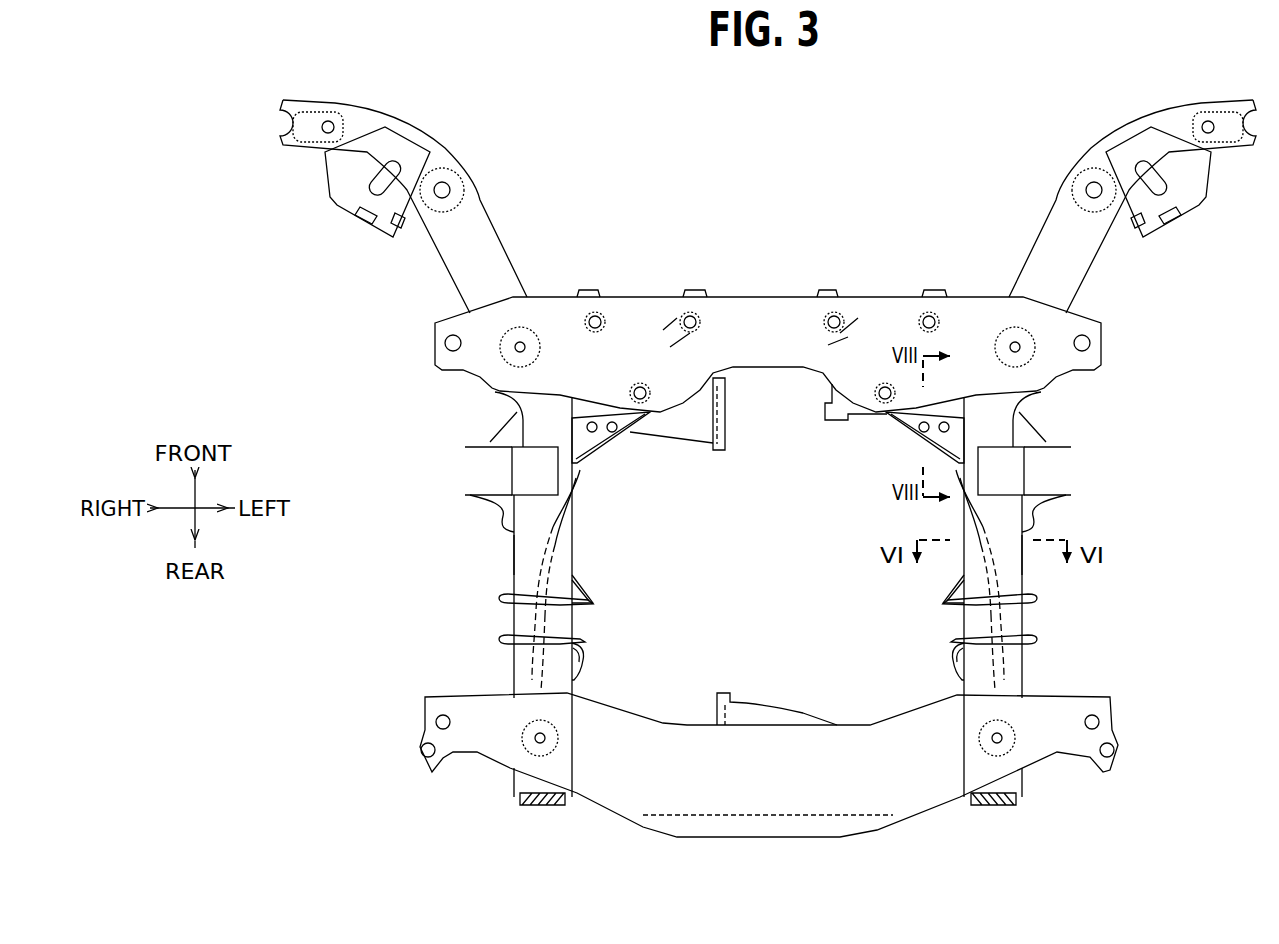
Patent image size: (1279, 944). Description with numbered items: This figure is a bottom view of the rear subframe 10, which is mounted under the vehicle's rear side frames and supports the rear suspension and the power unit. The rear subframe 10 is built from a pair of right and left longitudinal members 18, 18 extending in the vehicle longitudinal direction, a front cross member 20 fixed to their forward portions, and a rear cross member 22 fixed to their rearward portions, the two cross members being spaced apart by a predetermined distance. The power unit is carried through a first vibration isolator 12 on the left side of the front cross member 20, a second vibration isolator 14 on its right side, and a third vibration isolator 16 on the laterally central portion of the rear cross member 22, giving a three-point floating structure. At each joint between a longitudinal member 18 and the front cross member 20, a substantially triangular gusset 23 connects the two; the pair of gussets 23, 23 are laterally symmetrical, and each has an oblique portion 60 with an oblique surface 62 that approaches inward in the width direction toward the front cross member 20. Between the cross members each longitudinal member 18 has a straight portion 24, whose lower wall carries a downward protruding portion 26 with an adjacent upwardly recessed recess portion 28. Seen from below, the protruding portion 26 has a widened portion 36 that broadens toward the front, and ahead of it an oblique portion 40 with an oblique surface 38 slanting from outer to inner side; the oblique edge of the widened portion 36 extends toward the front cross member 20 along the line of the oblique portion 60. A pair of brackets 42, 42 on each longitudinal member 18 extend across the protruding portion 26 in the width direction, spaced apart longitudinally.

The rear subframe 10 is at (853, 168).
The first vibration isolator 12 is at (826, 392).
The second vibration isolator 14 is at (728, 442).
The third vibration isolator 16 is at (772, 696).
The longitudinal member 18 is at (510, 675).
The front cross member 20 is at (772, 292).
The rear cross member 22 is at (775, 845).
The gusset 23 is at (618, 452).
The straight portion 24 is at (510, 555).
The protruding portion 26 is at (525, 619).
The recess portion 28 is at (550, 557).
The widened portion 36 is at (568, 540).
The oblique surface 38 is at (563, 520).
The oblique portion 40 is at (548, 512).
The bracket 42 is at (600, 603).
The oblique portion of gusset 60 is at (593, 461).
The oblique surface of gusset 62 is at (632, 444).